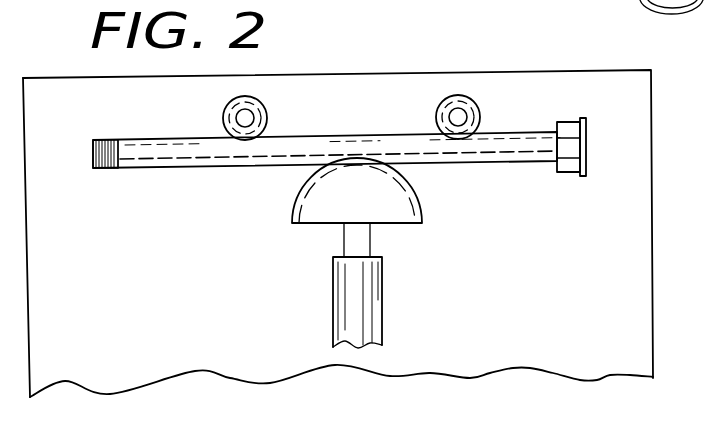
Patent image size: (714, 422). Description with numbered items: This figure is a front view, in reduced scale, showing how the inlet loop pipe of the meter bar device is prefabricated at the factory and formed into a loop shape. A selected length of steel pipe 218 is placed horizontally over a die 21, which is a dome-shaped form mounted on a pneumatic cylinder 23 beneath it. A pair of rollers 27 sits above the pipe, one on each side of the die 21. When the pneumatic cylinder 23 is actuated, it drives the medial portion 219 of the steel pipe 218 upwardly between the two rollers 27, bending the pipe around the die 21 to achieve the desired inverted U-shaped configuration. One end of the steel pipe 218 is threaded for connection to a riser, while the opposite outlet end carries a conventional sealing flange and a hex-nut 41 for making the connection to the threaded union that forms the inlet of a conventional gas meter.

The die 21 is at (422, 212).
The pneumatic cylinder 23 is at (382, 320).
The rollers 27 is at (223, 101).
The hex-nut 41 is at (568, 172).
The steel pipe 218 is at (135, 168).
The medial portion 219 is at (315, 135).